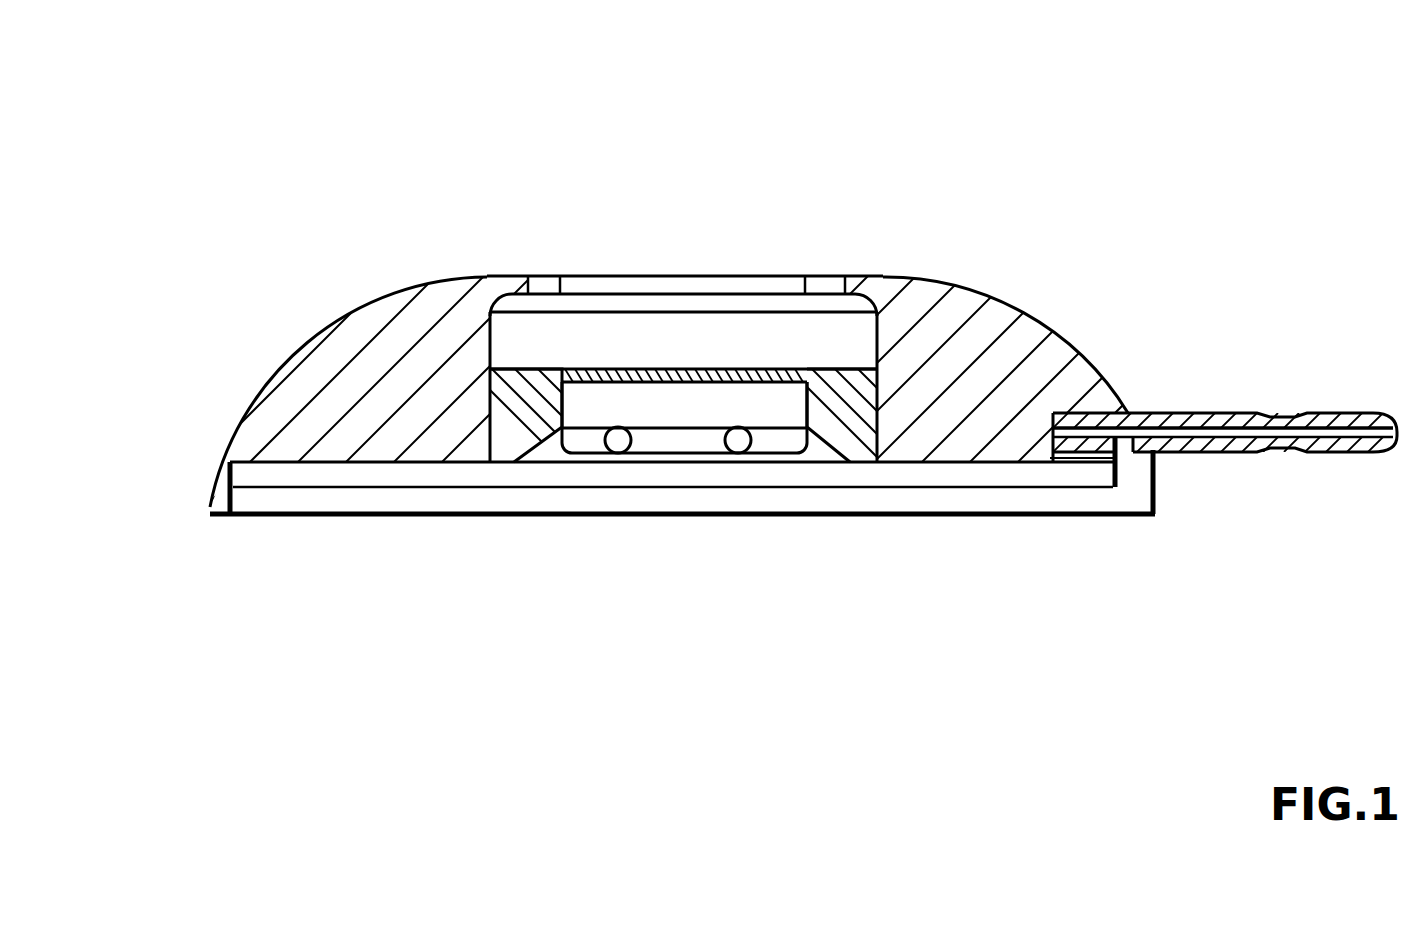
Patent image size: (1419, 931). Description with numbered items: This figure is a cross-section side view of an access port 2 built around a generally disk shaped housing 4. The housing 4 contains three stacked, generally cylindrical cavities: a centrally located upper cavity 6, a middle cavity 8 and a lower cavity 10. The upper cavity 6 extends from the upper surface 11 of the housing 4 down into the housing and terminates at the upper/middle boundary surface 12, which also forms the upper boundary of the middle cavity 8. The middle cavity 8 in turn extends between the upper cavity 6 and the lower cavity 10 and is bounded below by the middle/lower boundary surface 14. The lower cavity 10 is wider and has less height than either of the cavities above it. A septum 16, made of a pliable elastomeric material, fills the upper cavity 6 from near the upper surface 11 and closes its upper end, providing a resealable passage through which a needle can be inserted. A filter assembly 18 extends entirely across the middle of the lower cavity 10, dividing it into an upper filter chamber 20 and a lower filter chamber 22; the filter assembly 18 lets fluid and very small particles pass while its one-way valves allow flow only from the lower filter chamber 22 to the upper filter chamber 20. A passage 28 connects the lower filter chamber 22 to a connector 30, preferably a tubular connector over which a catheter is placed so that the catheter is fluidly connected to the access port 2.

The access port 2 is at (1065, 192).
The housing 4 is at (364, 307).
The upper cavity 6 is at (603, 340).
The middle cavity 8 is at (790, 412).
The lower cavity 10 is at (250, 475).
The upper surface 11 is at (783, 273).
The upper/middle boundary surface 12 is at (660, 369).
The middle/lower boundary surface 14 is at (690, 427).
The septum 16 is at (740, 312).
The filter assembly 18 is at (560, 487).
The upper filter chamber 20 is at (308, 474).
The lower filter chamber 22 is at (373, 503).
The passage 28 is at (1148, 455).
The connector 30 is at (1262, 390).